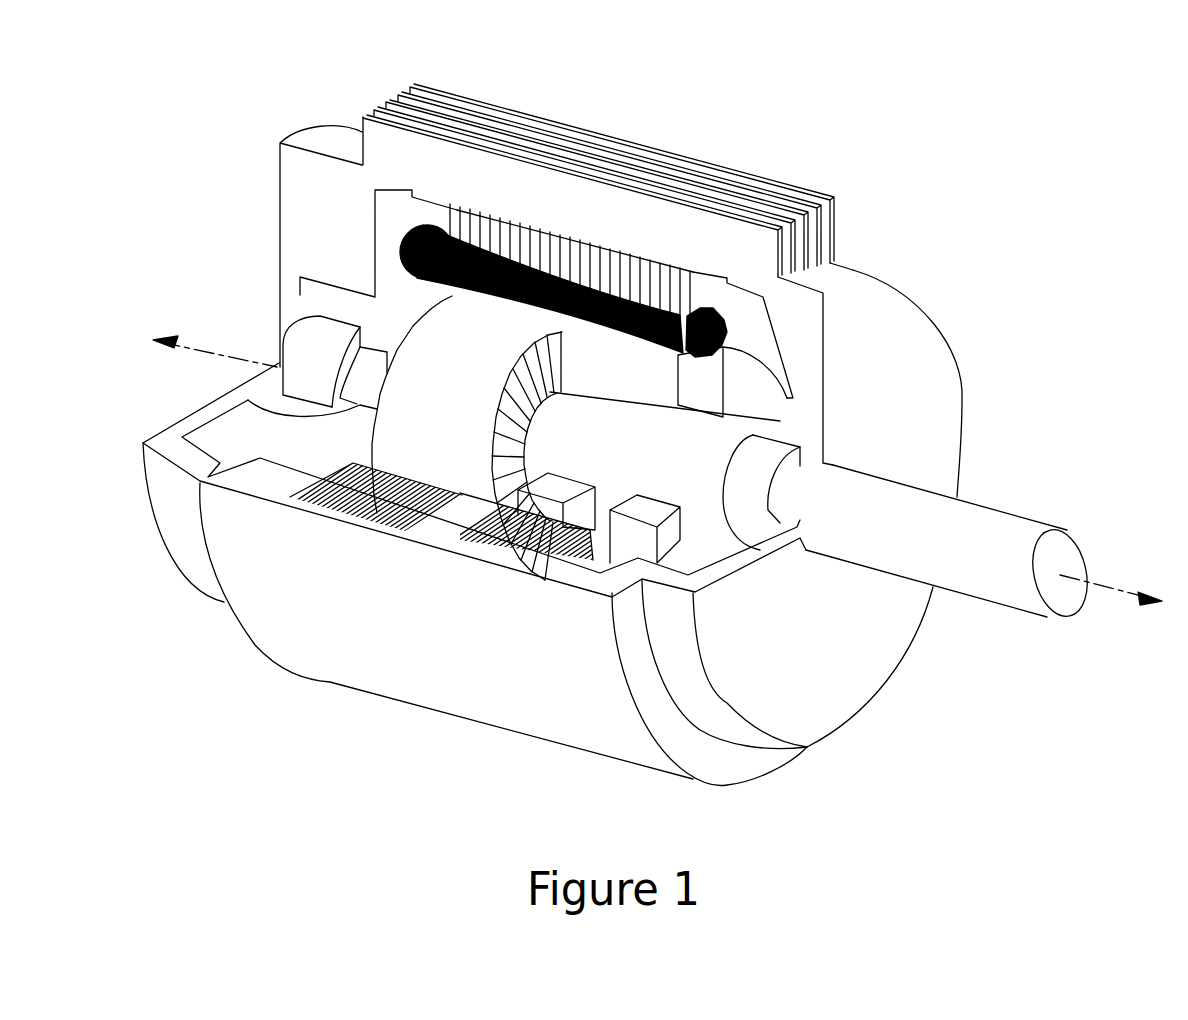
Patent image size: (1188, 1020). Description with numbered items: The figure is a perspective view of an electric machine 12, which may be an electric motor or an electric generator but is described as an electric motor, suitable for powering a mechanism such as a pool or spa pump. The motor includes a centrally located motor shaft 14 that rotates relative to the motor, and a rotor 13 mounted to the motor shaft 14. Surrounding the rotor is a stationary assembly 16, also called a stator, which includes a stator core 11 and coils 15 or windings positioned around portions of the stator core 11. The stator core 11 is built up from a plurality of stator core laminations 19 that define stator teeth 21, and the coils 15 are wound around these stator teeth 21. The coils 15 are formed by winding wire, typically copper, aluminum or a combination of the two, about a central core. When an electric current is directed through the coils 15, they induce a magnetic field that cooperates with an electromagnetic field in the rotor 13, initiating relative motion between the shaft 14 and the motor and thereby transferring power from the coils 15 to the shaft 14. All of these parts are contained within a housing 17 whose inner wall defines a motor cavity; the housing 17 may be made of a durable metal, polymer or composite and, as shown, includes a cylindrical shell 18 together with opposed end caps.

The stator core 11 is at (573, 233).
The electric machine 12 is at (900, 130).
The rotor 13 is at (425, 447).
The motor shaft 14 is at (1037, 518).
The coils 15 is at (541, 286).
The stationary assembly 16 is at (522, 280).
The housing 17 is at (788, 185).
The cylindrical shell 18 is at (853, 270).
The stator core laminations 19 is at (562, 577).
The stator teeth 21 is at (446, 502).